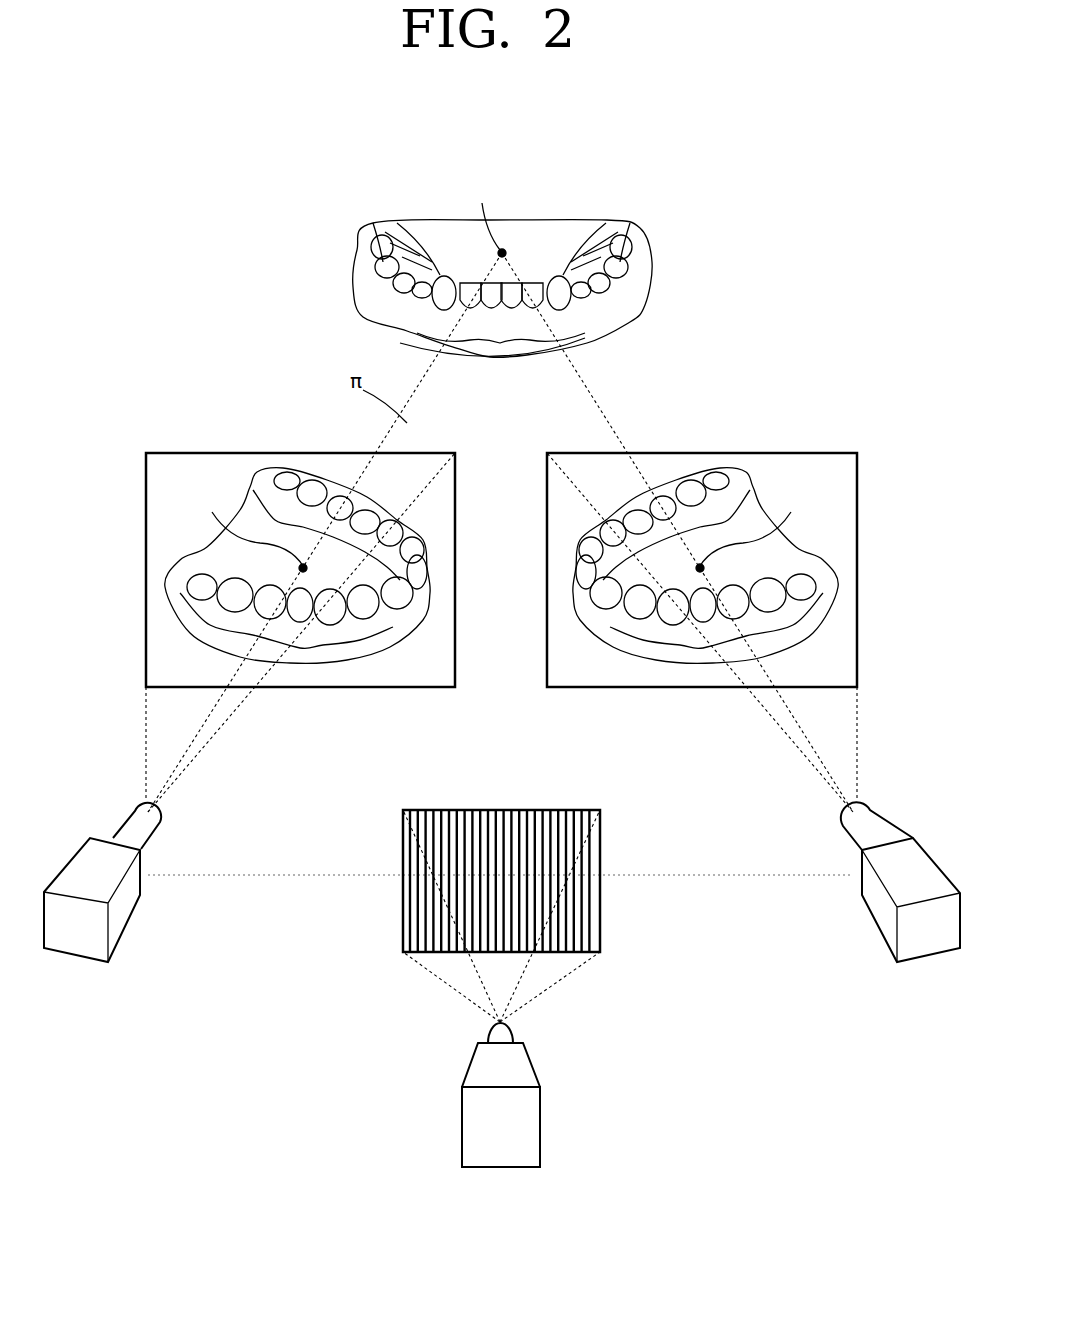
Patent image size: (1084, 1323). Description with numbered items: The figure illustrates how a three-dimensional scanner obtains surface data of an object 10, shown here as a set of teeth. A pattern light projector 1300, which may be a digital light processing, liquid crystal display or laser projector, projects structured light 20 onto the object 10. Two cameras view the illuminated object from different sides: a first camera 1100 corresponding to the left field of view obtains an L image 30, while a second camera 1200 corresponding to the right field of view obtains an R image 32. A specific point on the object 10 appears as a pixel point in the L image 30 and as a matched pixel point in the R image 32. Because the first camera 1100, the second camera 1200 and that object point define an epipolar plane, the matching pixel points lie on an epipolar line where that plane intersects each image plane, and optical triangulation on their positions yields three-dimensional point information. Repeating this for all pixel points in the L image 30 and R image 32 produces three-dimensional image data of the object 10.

The object 10 is at (590, 208).
The structured light 20 is at (520, 810).
The L image 30 is at (225, 452).
The R image 32 is at (777, 452).
The first camera 1100 is at (118, 915).
The second camera 1200 is at (878, 913).
The pattern light projector 1300 is at (537, 1068).